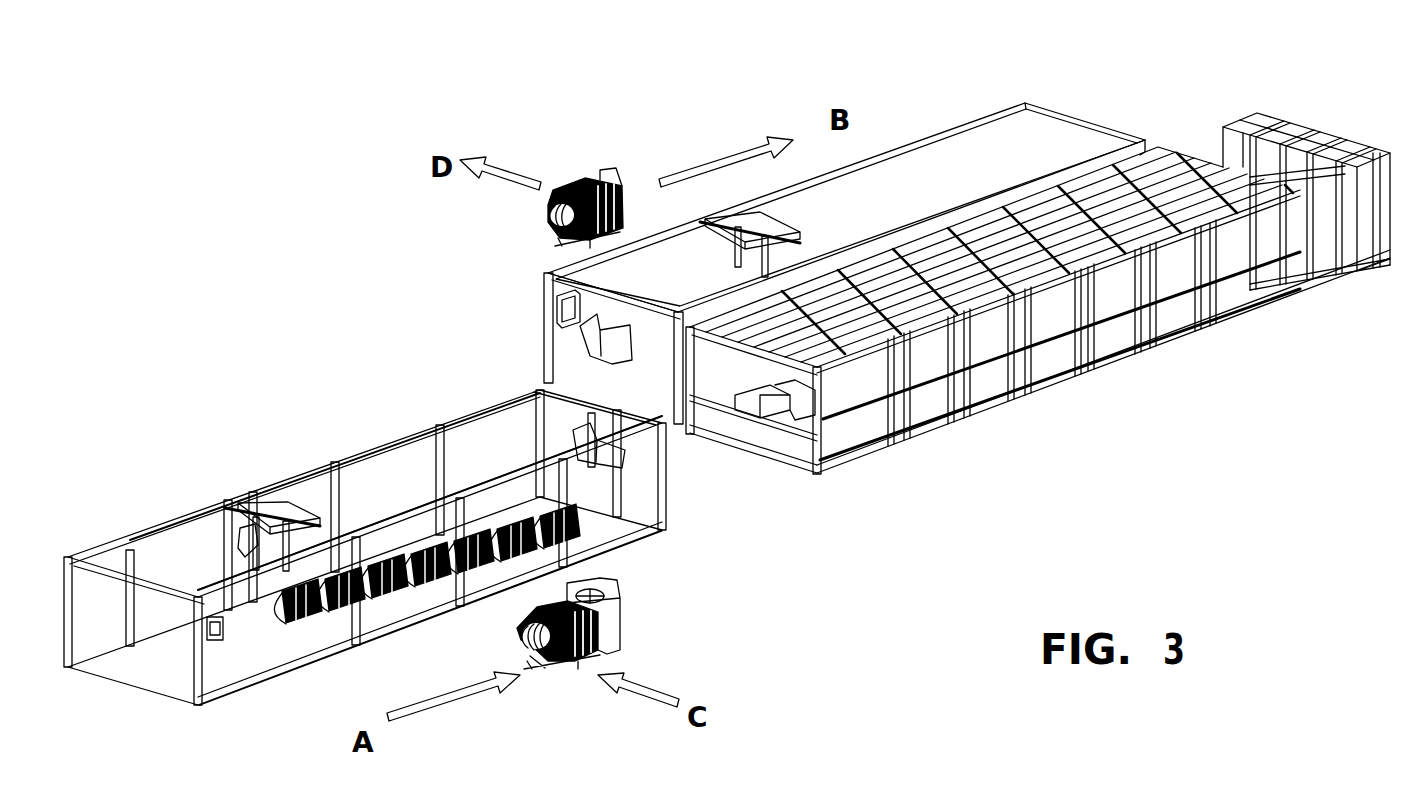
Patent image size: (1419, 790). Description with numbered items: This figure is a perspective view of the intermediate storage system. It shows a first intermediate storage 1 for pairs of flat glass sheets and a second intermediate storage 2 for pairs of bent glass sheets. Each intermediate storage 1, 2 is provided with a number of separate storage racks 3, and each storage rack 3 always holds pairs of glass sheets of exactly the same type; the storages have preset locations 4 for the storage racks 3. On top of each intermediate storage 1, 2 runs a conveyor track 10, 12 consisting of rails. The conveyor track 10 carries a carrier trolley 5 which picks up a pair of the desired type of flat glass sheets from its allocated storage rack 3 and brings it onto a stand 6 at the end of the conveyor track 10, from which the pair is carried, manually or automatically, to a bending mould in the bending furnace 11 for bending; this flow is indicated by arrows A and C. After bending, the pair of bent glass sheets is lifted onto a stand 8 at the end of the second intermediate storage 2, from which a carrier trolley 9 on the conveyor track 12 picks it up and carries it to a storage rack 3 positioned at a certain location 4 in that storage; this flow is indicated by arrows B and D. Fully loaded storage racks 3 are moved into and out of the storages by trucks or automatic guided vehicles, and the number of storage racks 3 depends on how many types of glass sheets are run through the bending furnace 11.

The first intermediate storage 1 is at (183, 507).
The second intermediate storage 2 is at (1050, 103).
The storage rack 3 is at (550, 667).
The preset location 4 is at (423, 593).
The carrier trolley 5 is at (295, 510).
The stand 6 is at (610, 457).
The stand 8 is at (603, 340).
The carrier trolley 9 is at (790, 227).
The conveyor track 10 is at (410, 497).
The bending furnace 11 is at (1100, 374).
The conveyor track 12 is at (970, 203).